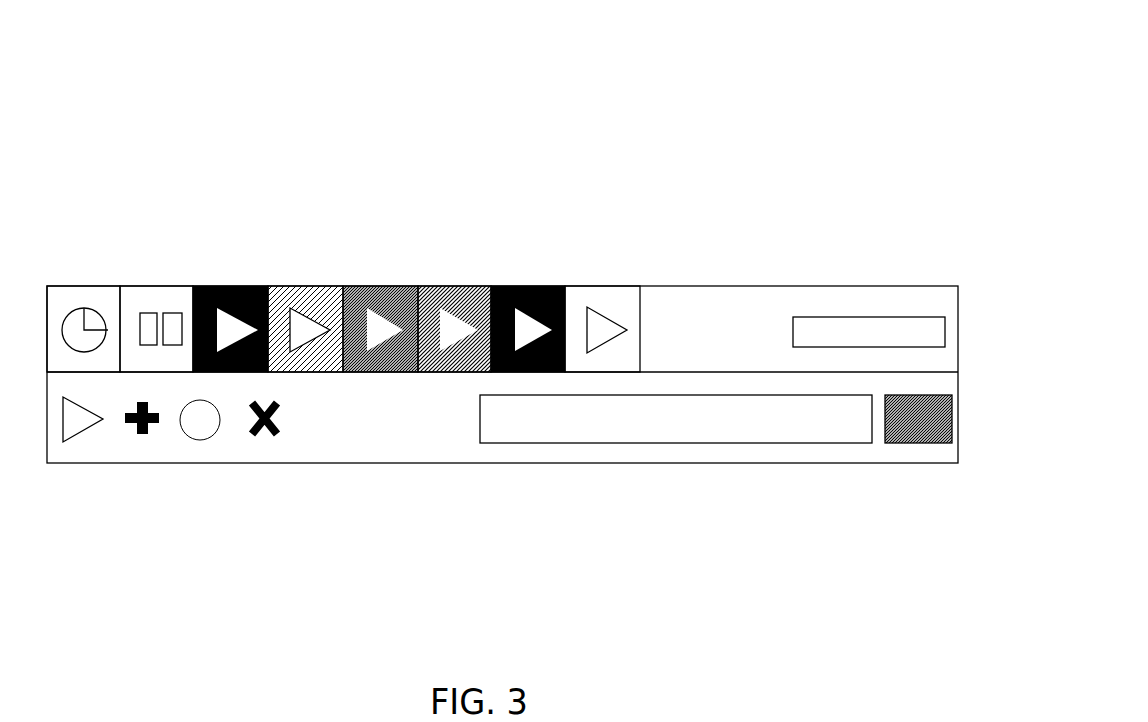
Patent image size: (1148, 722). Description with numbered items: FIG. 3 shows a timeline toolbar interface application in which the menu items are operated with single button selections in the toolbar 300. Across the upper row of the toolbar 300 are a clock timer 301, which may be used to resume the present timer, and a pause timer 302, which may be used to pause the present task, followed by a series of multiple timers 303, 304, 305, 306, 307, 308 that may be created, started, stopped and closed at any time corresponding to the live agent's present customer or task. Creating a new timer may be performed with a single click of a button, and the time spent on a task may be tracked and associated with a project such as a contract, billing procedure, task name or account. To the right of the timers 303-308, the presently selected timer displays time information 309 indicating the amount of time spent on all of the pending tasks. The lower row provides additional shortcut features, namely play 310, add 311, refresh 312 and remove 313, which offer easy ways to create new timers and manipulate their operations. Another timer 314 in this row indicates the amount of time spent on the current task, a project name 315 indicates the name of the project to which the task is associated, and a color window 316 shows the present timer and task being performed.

The toolbar 300 is at (502, 238).
The clock timer 301 is at (82, 292).
The pause timer 302 is at (157, 292).
The timer 303 is at (232, 290).
The timer 304 is at (305, 292).
The timer 305 is at (380, 288).
The timer 306 is at (455, 288).
The timer 307 is at (530, 288).
The timer 308 is at (597, 290).
The time information 309 is at (706, 318).
The play 310 is at (85, 432).
The add 311 is at (143, 428).
The refresh 312 is at (203, 431).
The remove 313 is at (260, 430).
The timer 314 is at (396, 430).
The project name 315 is at (551, 428).
The color window 316 is at (912, 437).